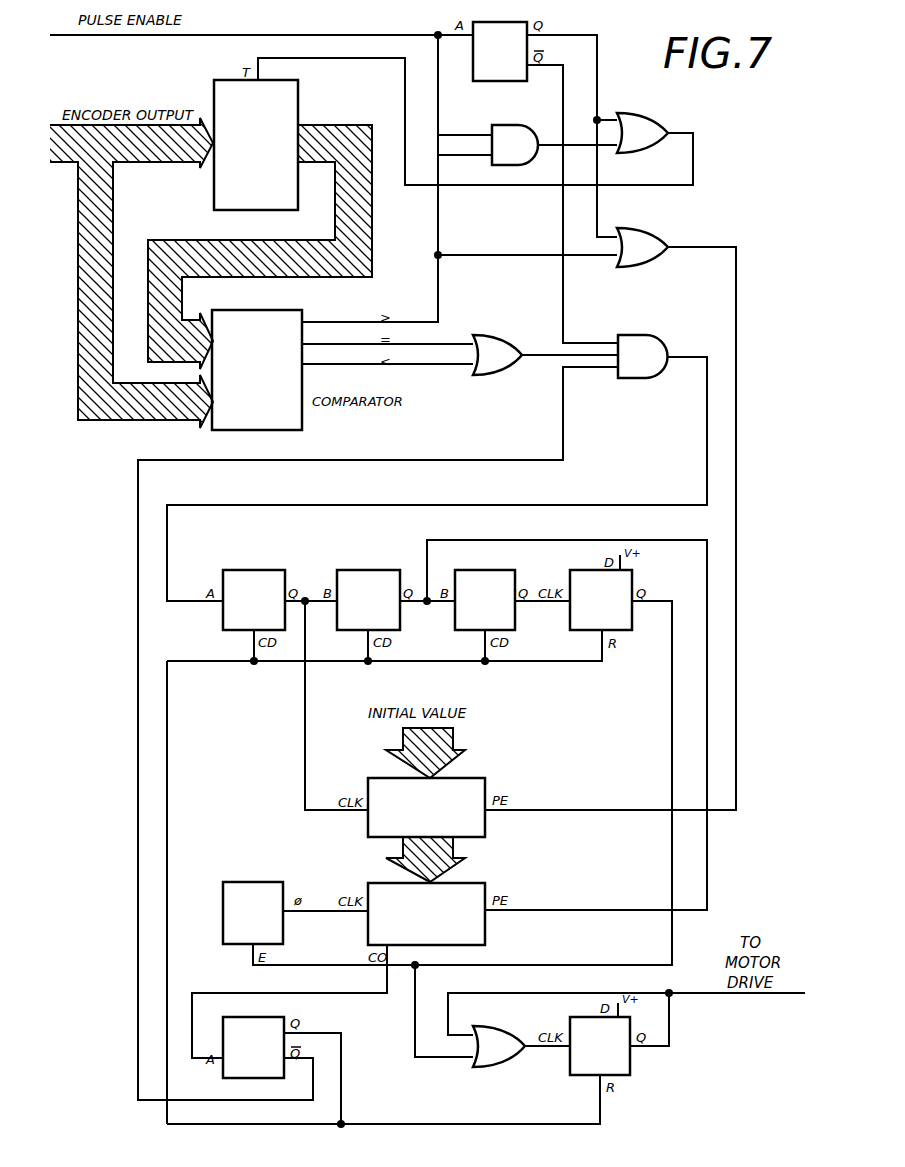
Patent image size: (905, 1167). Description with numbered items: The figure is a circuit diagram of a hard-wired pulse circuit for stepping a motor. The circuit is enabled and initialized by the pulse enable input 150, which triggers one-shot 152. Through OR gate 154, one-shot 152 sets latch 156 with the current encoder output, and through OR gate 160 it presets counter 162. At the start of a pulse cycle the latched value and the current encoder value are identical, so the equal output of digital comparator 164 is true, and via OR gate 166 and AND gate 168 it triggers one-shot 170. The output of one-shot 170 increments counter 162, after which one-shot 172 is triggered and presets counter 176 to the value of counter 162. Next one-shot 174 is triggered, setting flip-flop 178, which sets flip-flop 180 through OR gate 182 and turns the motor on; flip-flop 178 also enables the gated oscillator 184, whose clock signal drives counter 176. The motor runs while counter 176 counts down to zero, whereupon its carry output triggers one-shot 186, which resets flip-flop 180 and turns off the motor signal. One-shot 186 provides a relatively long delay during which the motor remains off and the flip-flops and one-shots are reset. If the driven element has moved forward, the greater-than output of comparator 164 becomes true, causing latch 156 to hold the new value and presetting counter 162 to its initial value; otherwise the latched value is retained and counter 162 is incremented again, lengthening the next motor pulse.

The pulse enable input 150 is at (300, 34).
The one-shot 152 is at (523, 20).
The OR gate 154 is at (621, 112).
The latch 156 is at (298, 112).
The OR gate 160 is at (668, 230).
The counter 162 is at (485, 830).
The digital comparator 164 is at (300, 310).
The OR gate 166 is at (520, 336).
The AND gate 168 is at (640, 335).
The one-shot 170 is at (270, 570).
The one-shot 172 is at (386, 570).
The one-shot 174 is at (502, 570).
The counter 176 is at (368, 883).
The flip-flop 178 is at (632, 628).
The flip-flop 180 is at (630, 1065).
The OR gate 182 is at (473, 1067).
The gated oscillator 184 is at (223, 882).
The one-shot 186 is at (223, 1072).